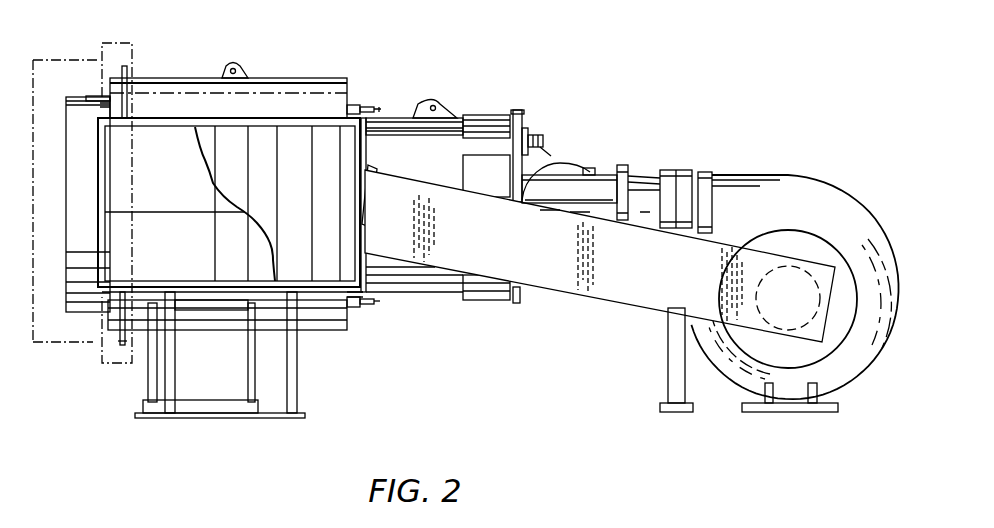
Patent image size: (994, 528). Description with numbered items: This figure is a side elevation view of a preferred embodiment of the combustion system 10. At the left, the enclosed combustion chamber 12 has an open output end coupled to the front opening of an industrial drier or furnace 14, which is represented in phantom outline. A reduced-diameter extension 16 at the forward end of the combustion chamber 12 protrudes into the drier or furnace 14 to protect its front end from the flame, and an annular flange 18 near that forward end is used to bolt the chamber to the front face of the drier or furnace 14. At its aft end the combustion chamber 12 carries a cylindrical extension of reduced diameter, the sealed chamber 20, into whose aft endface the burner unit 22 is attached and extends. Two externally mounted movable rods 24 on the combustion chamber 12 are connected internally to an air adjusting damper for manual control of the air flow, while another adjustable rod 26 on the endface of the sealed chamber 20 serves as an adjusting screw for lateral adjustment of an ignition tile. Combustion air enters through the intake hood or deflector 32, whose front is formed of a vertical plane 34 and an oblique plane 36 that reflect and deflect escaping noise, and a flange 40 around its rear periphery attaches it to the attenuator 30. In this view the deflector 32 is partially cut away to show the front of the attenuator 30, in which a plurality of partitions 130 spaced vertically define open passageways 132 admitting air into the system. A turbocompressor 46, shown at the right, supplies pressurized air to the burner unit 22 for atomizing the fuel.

The combustion system 10 is at (580, 141).
The combustion chamber 12 is at (288, 78).
The drier or furnace 14 is at (60, 70).
The extension 16 is at (88, 98).
The annular flange 18 is at (128, 72).
The sealed chamber 20 is at (410, 116).
The burner unit 22 is at (585, 168).
The movable rods 24 is at (372, 106).
The adjustable rod 26 is at (538, 133).
The attenuator 30 is at (367, 142).
The deflector 32 is at (118, 173).
The vertical plane 34 is at (160, 186).
The oblique plane 36 is at (186, 267).
The flange 40 is at (167, 118).
The turbocompressor 46 is at (786, 193).
The partitions 130 is at (233, 133).
The open passageways 132 is at (272, 242).